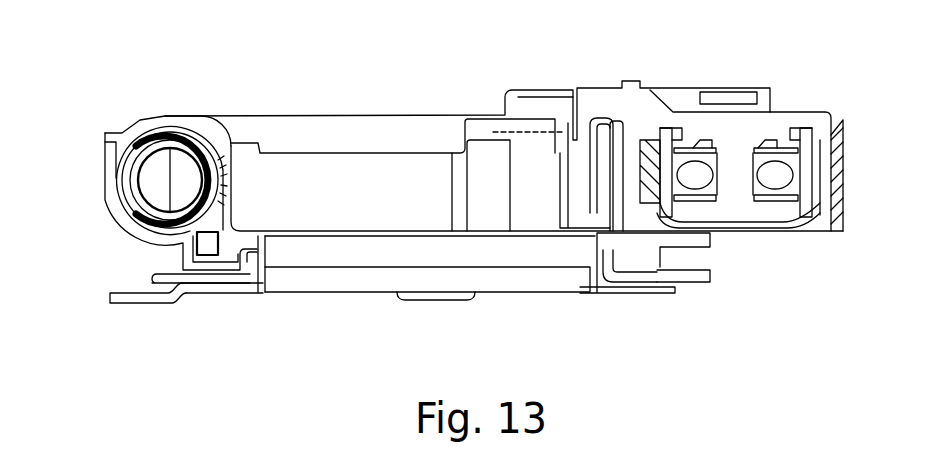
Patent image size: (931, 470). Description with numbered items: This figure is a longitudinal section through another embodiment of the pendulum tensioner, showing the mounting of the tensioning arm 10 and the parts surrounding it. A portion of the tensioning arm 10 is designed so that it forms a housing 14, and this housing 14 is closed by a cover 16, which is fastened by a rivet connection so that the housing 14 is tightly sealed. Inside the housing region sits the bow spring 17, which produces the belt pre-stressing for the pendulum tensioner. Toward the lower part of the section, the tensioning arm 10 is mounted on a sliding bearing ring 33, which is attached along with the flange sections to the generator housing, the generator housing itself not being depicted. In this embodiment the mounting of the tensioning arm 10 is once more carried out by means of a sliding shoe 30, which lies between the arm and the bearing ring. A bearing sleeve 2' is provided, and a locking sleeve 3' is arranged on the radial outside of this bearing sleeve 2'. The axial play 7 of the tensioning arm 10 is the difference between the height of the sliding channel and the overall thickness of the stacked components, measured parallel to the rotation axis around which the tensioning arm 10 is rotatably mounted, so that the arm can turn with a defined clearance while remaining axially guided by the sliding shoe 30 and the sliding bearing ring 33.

The cover 16 is at (143, 120).
The housing 14 is at (247, 185).
The bow spring 17 is at (132, 208).
The tensioning arm 10 is at (128, 232).
The sliding bearing ring 33 is at (135, 297).
The sliding shoe 30 is at (232, 297).
The axial play 7 is at (265, 297).
The bearing sleeve 2' is at (311, 308).
The locking sleeve 3' is at (427, 324).